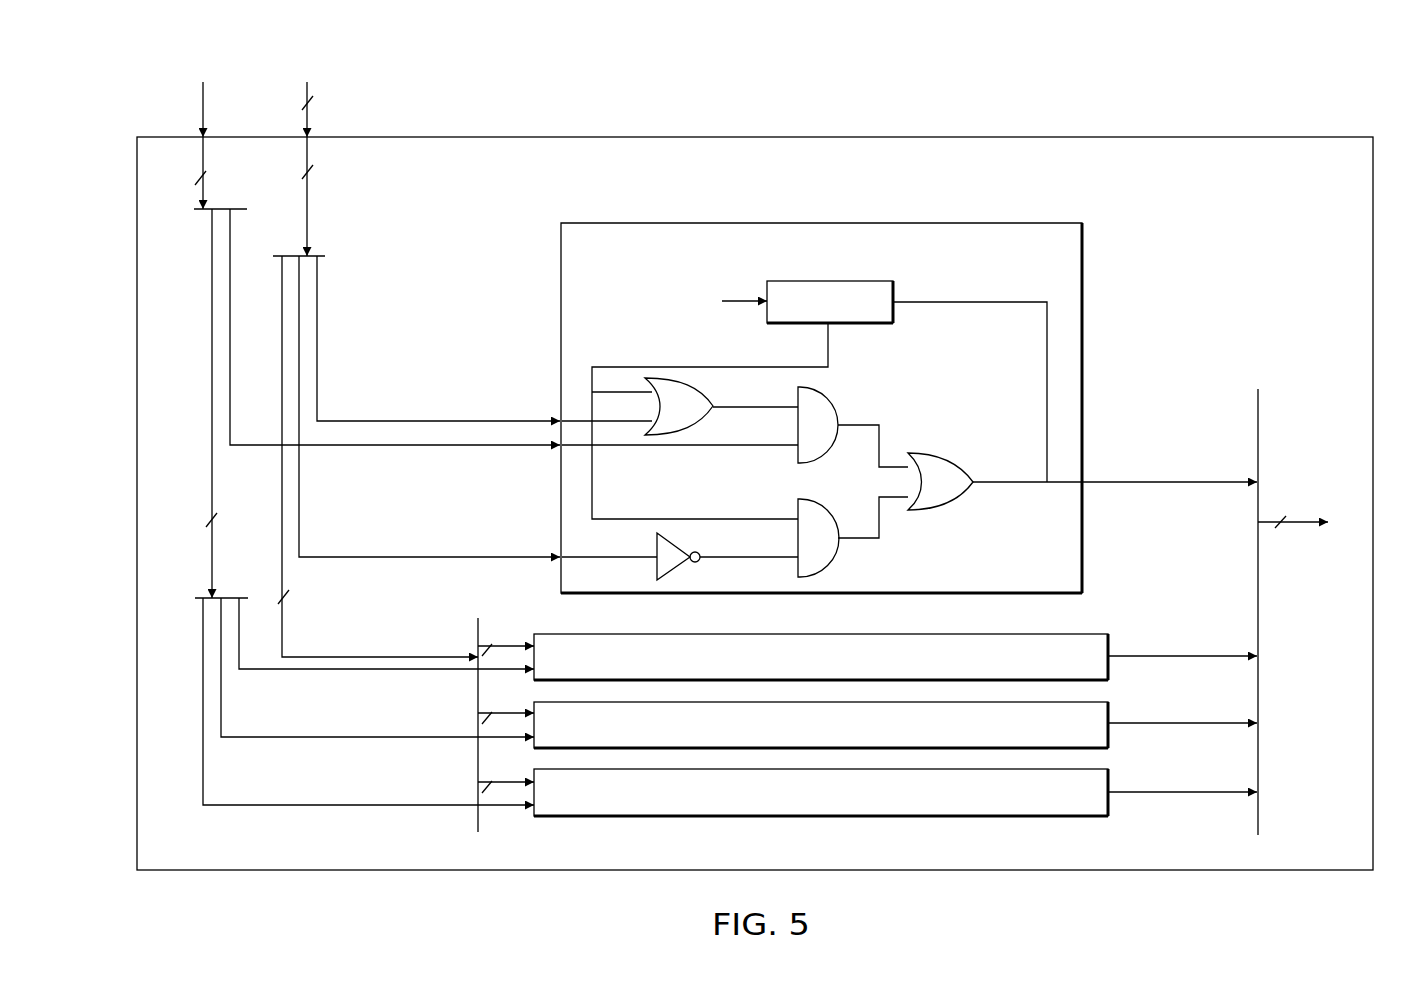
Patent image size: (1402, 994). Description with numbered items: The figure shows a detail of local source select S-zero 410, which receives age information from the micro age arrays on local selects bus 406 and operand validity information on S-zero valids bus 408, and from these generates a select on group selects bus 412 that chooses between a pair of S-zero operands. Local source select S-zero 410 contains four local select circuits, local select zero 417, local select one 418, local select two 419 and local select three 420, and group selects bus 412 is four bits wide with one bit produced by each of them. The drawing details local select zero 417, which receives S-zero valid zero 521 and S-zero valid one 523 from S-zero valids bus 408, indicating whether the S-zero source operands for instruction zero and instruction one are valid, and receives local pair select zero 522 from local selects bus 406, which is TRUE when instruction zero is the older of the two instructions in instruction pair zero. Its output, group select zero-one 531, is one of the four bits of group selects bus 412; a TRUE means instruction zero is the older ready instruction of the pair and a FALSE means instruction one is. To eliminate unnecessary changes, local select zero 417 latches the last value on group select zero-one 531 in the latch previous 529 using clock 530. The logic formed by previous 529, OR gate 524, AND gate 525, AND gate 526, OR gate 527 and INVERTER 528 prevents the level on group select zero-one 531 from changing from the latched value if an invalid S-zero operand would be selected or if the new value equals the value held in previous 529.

The local selects bus 406 is at (168, 42).
The S0 valids bus 408 is at (325, 40).
The local source select S0 410 is at (1292, 137).
The group selects bus 412 is at (1307, 588).
The local select_0 417 is at (1085, 266).
The local select_1 418 is at (1112, 645).
The local select_2 419 is at (1112, 712).
The local select_3 420 is at (1112, 782).
The S0 valid_0 521 is at (455, 407).
The local pair select_0 522 is at (403, 475).
The S0 valid_1 523 is at (412, 545).
The OR gate 524 is at (705, 390).
The AND gate 525 is at (802, 390).
The AND gate 526 is at (802, 503).
The OR gate 527 is at (955, 462).
The INVERTER 528 is at (678, 545).
The previous 529 is at (878, 282).
The clock 530 is at (722, 298).
The group select_0_1 531 is at (1162, 476).